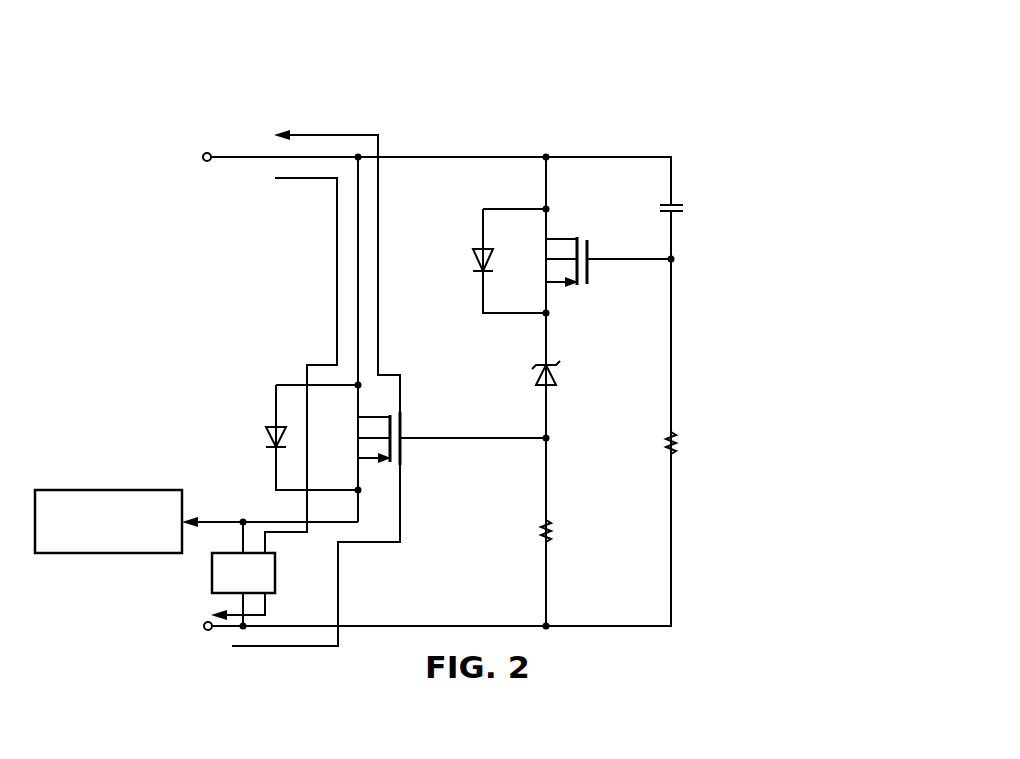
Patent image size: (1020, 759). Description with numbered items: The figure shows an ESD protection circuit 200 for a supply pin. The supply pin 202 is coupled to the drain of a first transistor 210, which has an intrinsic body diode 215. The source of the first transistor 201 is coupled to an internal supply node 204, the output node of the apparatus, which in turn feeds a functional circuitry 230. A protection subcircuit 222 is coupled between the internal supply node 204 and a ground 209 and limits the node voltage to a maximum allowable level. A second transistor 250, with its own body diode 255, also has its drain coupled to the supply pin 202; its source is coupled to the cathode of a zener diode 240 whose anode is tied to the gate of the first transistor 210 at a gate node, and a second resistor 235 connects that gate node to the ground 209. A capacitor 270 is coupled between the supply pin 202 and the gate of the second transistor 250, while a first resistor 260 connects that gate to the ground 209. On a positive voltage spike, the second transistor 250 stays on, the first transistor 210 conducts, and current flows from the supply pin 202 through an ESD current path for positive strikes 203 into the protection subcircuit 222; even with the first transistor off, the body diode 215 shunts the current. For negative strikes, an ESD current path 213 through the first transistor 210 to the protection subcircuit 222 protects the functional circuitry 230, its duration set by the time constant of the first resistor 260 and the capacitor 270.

The ESD protection circuit 200 is at (622, 68).
The source of the PFET M1 201 is at (350, 523).
The VDDPIN 202 is at (207, 152).
The ESD current path for positive strikes 203 is at (337, 330).
The VDDINT node 204 is at (222, 520).
The GND 209 is at (209, 632).
The PFET M1 210 is at (402, 447).
The ESD current path for negative strikes 213 is at (327, 134).
The body diode 215 is at (265, 437).
The ESD1 subcircuit 222 is at (212, 573).
The functional circuitry 230 is at (108, 490).
The resistor R2 235 is at (552, 533).
The zener diode 240 is at (559, 364).
The PFET M2 250 is at (592, 272).
The body diode 255 is at (473, 260).
The resistor R1 260 is at (678, 447).
The capacitor C1 270 is at (684, 210).